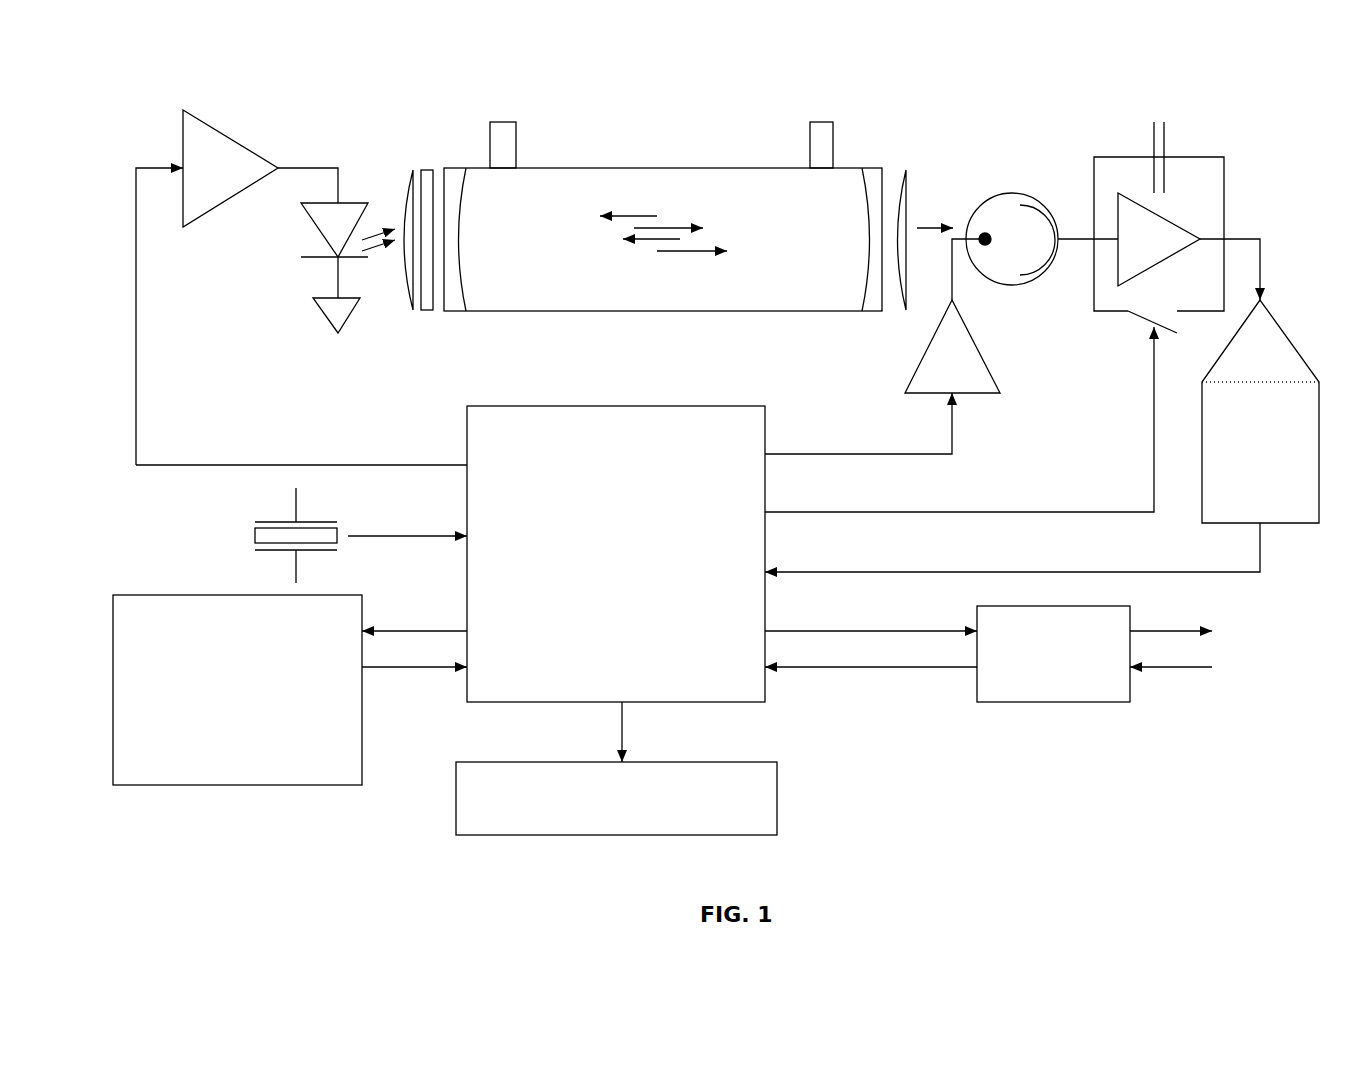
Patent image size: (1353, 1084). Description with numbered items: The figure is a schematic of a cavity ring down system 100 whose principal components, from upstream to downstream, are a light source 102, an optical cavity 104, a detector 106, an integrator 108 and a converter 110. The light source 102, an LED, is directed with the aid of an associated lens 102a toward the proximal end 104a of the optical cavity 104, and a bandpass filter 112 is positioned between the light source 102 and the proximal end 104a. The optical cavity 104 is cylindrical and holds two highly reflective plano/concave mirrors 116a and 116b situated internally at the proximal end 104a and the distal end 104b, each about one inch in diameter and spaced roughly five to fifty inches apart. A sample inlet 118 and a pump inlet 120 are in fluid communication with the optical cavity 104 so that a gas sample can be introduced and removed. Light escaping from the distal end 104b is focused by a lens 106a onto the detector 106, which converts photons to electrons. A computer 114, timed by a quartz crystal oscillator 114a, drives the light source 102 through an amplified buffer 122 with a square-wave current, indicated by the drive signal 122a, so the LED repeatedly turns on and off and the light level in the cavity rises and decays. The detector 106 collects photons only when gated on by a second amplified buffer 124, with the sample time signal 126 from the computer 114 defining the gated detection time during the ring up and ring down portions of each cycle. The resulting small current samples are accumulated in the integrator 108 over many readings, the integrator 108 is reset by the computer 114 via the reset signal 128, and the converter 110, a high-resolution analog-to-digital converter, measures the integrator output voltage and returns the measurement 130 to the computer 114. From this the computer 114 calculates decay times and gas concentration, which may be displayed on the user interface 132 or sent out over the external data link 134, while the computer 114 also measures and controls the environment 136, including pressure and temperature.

The cavity ring down system 100 is at (867, 697).
The light source 102 is at (302, 258).
The lens 102a is at (400, 215).
The optical cavity 104 is at (705, 168).
The proximal end 104a is at (492, 277).
The distal end 104b is at (838, 277).
The detector 106 is at (1012, 193).
The lens 106a is at (905, 168).
The integrator 108 is at (1123, 155).
The converter 110 is at (1290, 338).
The bandpass filter 112 is at (420, 168).
The computer 114 is at (612, 512).
The quartz crystal oscillator 114a is at (253, 535).
The plano/concave mirror 116a is at (467, 311).
The plano/concave mirror 116b is at (880, 312).
The sample inlet 118 is at (490, 147).
The pump inlet 120 is at (810, 147).
The amplified buffer 122 is at (230, 180).
The light source drive signal 122a is at (136, 322).
The amplified buffer 124 is at (957, 381).
The sample time signal output 126 is at (882, 453).
The reset signal 128 is at (1117, 510).
The measurement signal 130 is at (882, 572).
The user interface 132 is at (598, 812).
The external data link 134 is at (1035, 666).
The environment measurement and control 136 is at (232, 677).